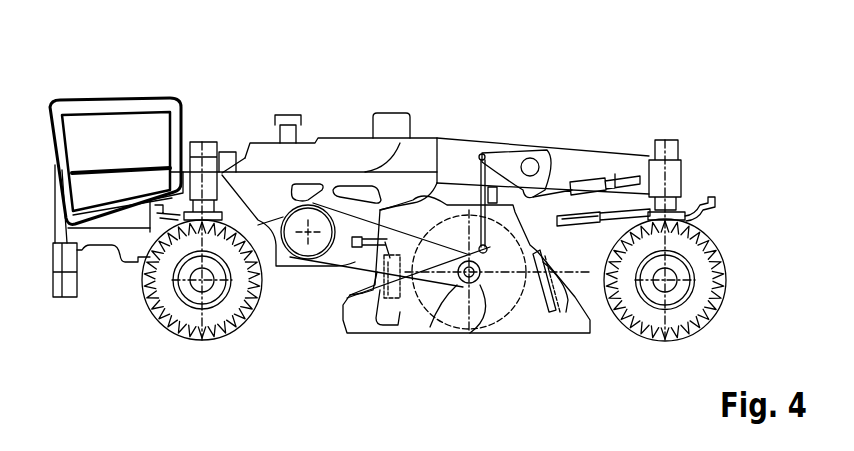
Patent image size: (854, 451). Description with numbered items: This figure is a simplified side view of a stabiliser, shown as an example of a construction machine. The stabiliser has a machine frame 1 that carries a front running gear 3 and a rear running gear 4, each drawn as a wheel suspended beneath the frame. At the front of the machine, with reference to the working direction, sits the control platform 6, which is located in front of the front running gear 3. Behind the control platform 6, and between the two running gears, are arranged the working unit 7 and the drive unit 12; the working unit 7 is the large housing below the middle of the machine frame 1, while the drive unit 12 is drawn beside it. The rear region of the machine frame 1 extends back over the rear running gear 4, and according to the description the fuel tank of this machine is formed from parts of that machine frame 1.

The machine frame 1 is at (490, 129).
The front running gear 3 is at (147, 311).
The rear running gear 4 is at (734, 275).
The control platform 6 is at (133, 90).
The working unit 7 is at (433, 338).
The drive unit 12 is at (285, 255).